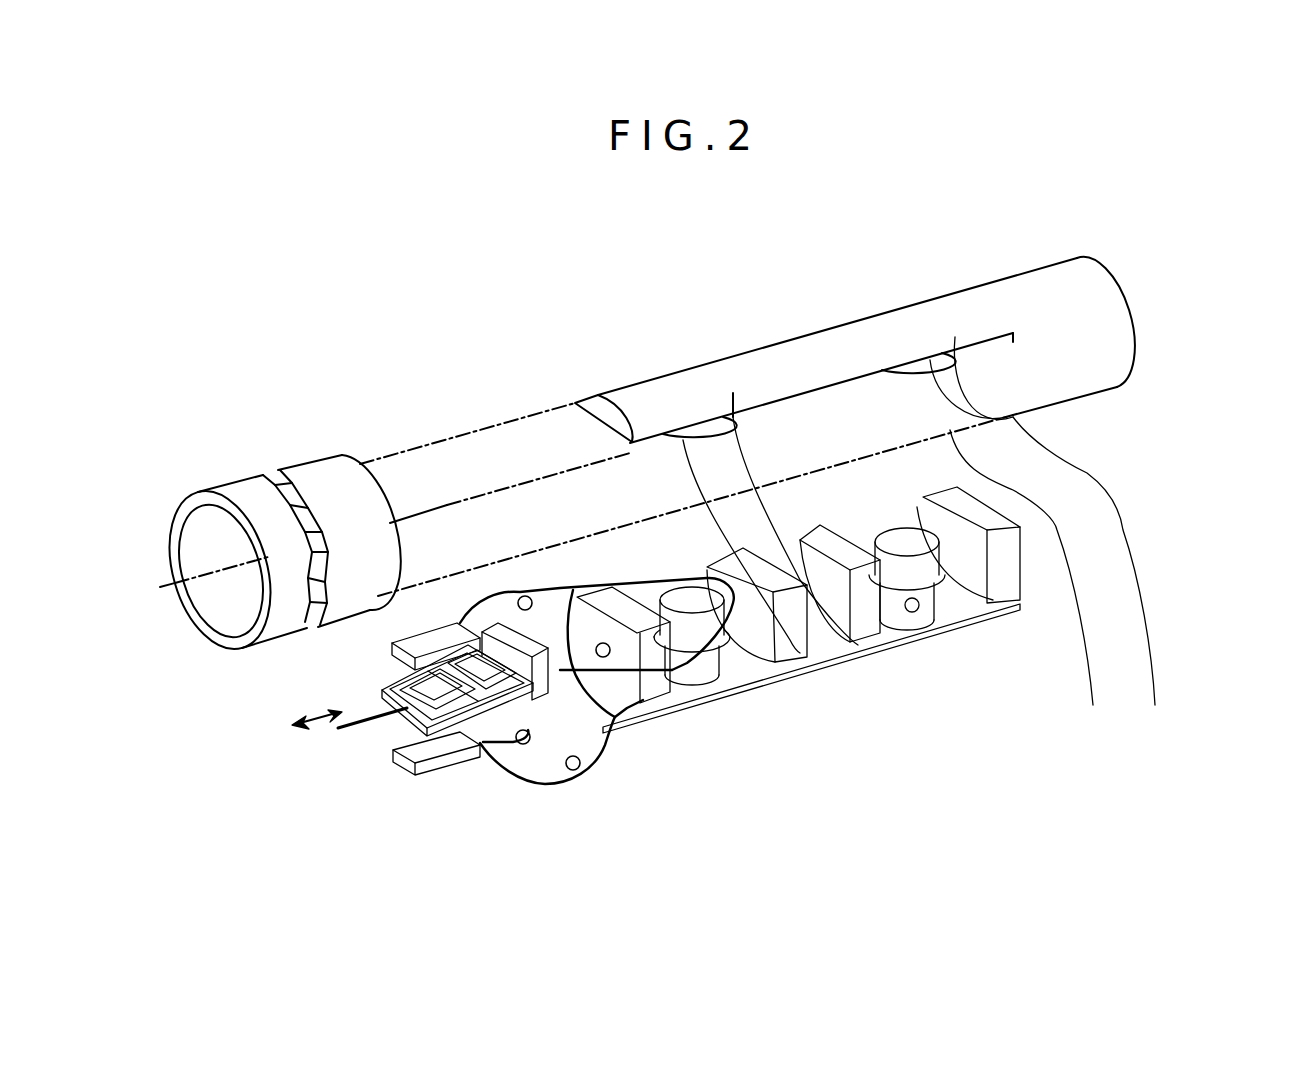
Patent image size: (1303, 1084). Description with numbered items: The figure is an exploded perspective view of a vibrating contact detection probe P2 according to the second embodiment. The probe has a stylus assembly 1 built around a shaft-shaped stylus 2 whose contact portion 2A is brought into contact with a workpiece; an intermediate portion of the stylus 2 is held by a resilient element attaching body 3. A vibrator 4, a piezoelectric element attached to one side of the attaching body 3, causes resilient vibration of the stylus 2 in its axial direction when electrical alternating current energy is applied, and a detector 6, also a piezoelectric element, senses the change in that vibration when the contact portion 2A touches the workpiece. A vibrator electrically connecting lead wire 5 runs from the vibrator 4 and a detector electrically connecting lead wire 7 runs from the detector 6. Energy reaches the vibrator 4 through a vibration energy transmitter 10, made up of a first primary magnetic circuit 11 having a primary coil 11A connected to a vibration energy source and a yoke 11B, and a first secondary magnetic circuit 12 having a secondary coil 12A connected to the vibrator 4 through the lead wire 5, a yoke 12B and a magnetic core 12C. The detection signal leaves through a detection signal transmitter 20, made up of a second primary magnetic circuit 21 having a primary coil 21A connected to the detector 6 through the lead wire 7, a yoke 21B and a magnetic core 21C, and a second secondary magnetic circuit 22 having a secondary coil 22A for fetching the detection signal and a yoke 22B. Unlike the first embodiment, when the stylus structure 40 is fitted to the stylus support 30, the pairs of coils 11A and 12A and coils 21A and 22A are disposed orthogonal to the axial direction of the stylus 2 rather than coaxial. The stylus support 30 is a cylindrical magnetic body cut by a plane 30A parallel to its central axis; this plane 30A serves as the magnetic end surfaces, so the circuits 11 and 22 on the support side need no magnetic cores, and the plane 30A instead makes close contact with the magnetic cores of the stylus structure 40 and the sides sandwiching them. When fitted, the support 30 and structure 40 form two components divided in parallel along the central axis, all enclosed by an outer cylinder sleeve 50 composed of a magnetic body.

The stylus assembly 1 is at (415, 808).
The stylus 2 is at (380, 722).
The contact portion 2A is at (348, 730).
The resilient element attaching body 3 is at (532, 690).
The vibrator 4 is at (450, 767).
The vibrator electrically connecting lead wire 5 is at (557, 787).
The detector 6 is at (392, 647).
The detector electrically connecting lead wire 7 is at (562, 670).
The vibration energy transmitter 10 is at (891, 582).
The first primary magnetic circuit 11 is at (1054, 559).
The primary coil 11A is at (1032, 536).
The yoke 11B is at (1077, 738).
The first secondary magnetic circuit 12 is at (921, 634).
The secondary coil 12A is at (940, 600).
The yoke 12B is at (872, 622).
The magnetic core 12C is at (982, 603).
The detection signal transmitter 20 is at (742, 664).
The second primary magnetic circuit 21 is at (692, 706).
The primary coil 21A is at (695, 690).
The yoke 21B is at (760, 647).
The magnetic core 21C is at (712, 627).
The second secondary magnetic circuit 22 is at (795, 641).
The secondary coil 22A is at (800, 653).
The yoke 22B is at (858, 645).
The stylus support 30 is at (1108, 300).
The plane 30A is at (575, 403).
The stylus structure 40 is at (1018, 600).
The outer cylinder sleeve 50 is at (320, 465).
The vibrating contact detection probe P2 is at (1150, 410).